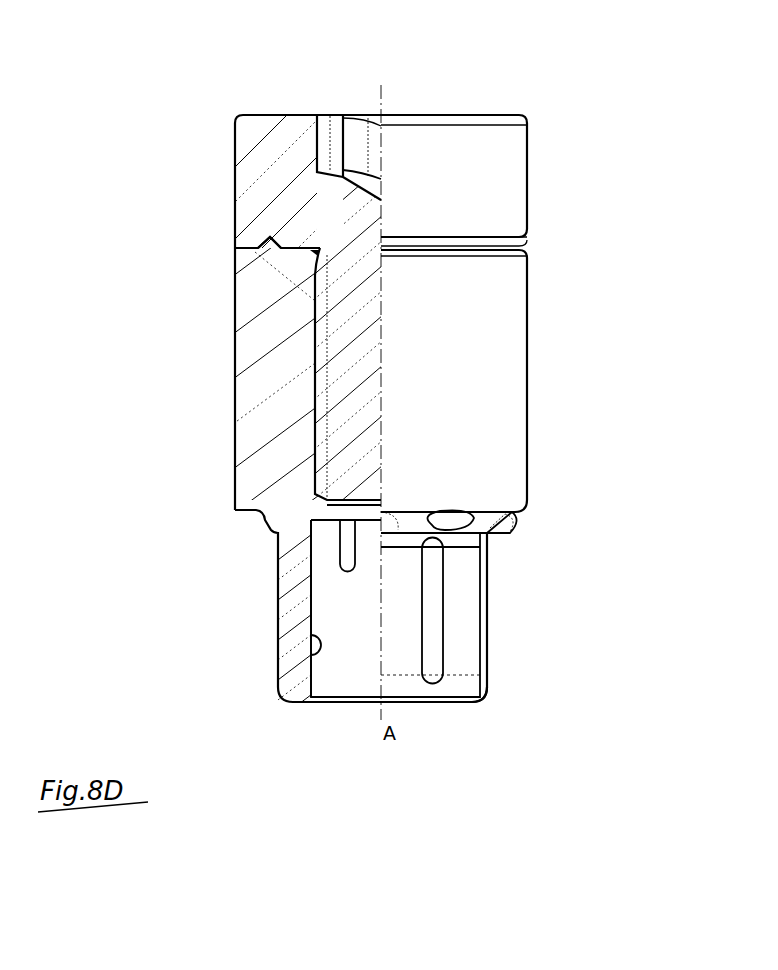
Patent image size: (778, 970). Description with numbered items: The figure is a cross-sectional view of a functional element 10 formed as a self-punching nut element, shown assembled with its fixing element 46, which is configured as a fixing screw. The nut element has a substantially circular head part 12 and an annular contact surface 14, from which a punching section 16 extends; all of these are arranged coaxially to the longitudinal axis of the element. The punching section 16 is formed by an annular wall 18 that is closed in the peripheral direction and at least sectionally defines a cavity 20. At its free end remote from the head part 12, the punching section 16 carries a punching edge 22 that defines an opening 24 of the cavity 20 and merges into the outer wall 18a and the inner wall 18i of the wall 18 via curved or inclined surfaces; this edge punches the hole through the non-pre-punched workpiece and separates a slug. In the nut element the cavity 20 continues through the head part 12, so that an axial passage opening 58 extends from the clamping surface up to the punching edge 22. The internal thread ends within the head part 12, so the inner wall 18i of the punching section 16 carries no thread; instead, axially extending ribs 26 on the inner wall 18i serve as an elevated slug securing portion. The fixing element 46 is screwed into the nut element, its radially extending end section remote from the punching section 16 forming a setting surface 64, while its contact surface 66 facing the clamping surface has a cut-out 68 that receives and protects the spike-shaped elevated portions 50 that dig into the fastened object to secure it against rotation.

The setting surface 64 is at (263, 103).
The fixing element 46 is at (540, 147).
The head part 12 is at (527, 300).
The functional element 10 is at (550, 360).
The cut-out 68 is at (272, 240).
The contact surface 66 is at (250, 241).
The spike-shaped elevated portions 50 is at (268, 242).
The ribs 26 is at (334, 553).
The annular wall 18 is at (288, 580).
The punching section 16 is at (258, 618).
The inner wall 18i is at (318, 648).
The contact surface 14 is at (489, 535).
The outer wall 18a is at (465, 643).
The punching edge 22 is at (470, 703).
The opening 24 is at (345, 688).
The axial passage opening 58 is at (346, 614).
The cavity 20 is at (365, 648).